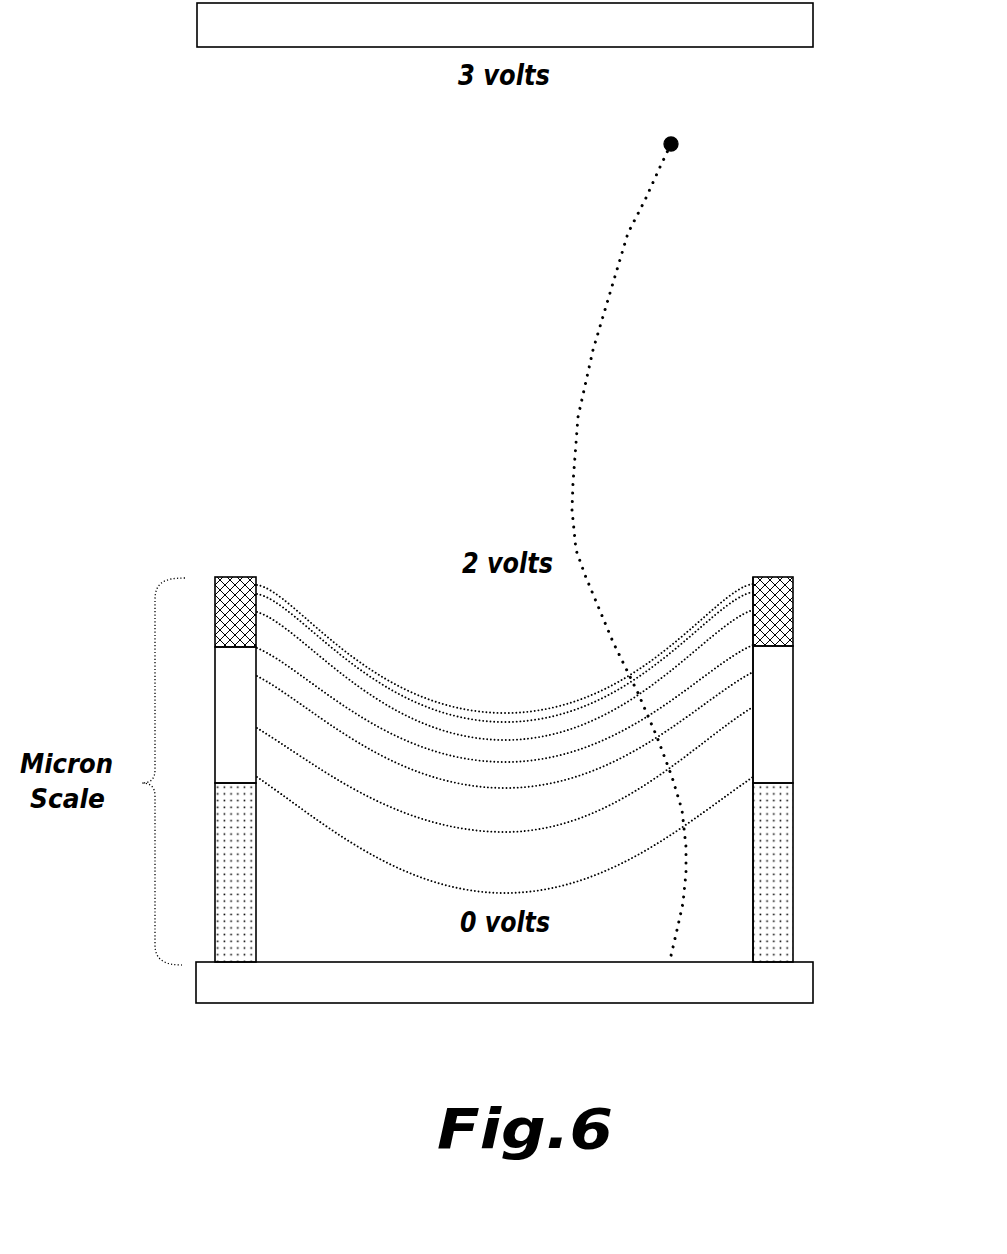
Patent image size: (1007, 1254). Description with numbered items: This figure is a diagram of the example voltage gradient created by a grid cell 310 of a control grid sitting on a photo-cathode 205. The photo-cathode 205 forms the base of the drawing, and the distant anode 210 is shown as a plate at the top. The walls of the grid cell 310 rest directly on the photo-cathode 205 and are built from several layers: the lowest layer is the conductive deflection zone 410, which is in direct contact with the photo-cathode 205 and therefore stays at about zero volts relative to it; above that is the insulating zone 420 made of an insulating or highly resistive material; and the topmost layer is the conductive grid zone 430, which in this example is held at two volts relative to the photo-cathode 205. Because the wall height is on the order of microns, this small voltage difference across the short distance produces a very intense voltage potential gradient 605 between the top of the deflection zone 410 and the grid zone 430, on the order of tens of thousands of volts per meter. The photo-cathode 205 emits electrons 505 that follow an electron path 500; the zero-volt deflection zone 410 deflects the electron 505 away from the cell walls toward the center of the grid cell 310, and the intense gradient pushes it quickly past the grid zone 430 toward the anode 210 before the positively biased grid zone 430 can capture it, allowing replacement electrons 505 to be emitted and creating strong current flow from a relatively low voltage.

The anode 210 is at (196, 42).
The photo-cathode 205 is at (297, 1004).
The grid zone 430 is at (258, 605).
The insulating zone 420 is at (257, 712).
The deflection zone 410 is at (257, 865).
The grid cell 310 is at (712, 462).
The voltage potential gradient 605 is at (742, 561).
The electron path 500 is at (610, 297).
The electron 505 is at (678, 150).